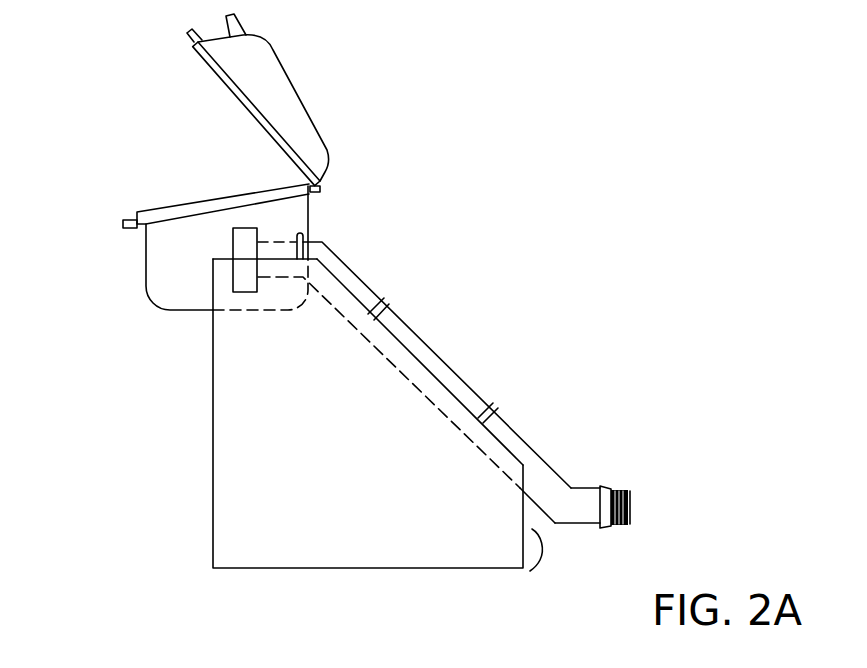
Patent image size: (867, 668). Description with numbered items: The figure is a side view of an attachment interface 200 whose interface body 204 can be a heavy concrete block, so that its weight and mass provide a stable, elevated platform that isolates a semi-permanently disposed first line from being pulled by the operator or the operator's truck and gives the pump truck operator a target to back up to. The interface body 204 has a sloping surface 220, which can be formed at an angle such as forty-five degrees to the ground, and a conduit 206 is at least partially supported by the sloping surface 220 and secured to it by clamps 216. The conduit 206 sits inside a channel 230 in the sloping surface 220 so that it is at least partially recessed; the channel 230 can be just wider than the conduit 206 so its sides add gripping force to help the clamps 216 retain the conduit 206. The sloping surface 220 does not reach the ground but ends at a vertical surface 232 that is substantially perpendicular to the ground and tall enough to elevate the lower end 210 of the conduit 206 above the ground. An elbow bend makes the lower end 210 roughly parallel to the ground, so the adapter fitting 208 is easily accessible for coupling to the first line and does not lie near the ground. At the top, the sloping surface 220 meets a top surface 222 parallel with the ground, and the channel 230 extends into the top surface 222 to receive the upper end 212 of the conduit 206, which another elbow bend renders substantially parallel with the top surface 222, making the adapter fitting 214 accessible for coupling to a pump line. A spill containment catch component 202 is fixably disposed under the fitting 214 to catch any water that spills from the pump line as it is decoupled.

The attachment interface 200 is at (150, 514).
The spill containment catch component 202 is at (155, 165).
The interface body 204 is at (213, 430).
The conduit 206 is at (458, 373).
The adapter fitting 208 is at (618, 488).
The lower end 210 is at (586, 476).
The upper end 212 is at (335, 224).
The adapter fitting 214 is at (232, 265).
The clamps 216 is at (384, 298).
The sloping surface 220 is at (447, 334).
The top surface 222 is at (225, 260).
The channel 230 is at (412, 353).
The vertical surface 232 is at (528, 467).